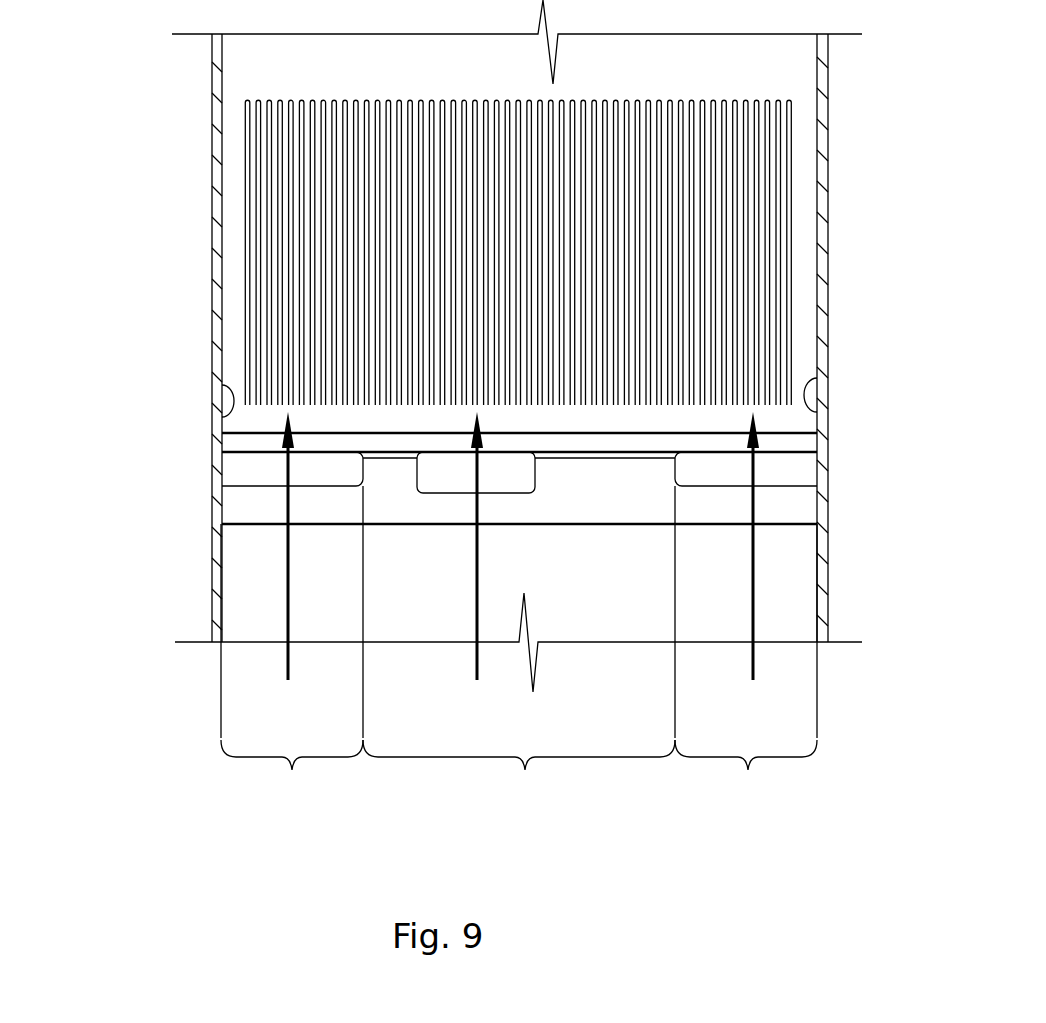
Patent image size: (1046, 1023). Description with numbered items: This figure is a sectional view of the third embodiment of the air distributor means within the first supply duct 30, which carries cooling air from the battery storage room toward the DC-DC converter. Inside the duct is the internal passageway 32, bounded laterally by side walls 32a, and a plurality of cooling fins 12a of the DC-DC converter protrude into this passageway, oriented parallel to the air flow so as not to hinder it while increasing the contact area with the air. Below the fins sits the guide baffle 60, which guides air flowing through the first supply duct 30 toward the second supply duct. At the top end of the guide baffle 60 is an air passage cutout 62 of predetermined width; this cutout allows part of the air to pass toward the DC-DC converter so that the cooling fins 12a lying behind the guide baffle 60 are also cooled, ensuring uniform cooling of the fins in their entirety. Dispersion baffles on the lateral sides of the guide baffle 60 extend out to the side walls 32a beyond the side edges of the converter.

The cooling fins 12a is at (258, 328).
The first supply duct 30 is at (828, 147).
The internal passageway 32 is at (600, 426).
The side walls 32a is at (210, 385).
The guide baffle 60 is at (519, 635).
The air passage cutout 62 is at (443, 483).